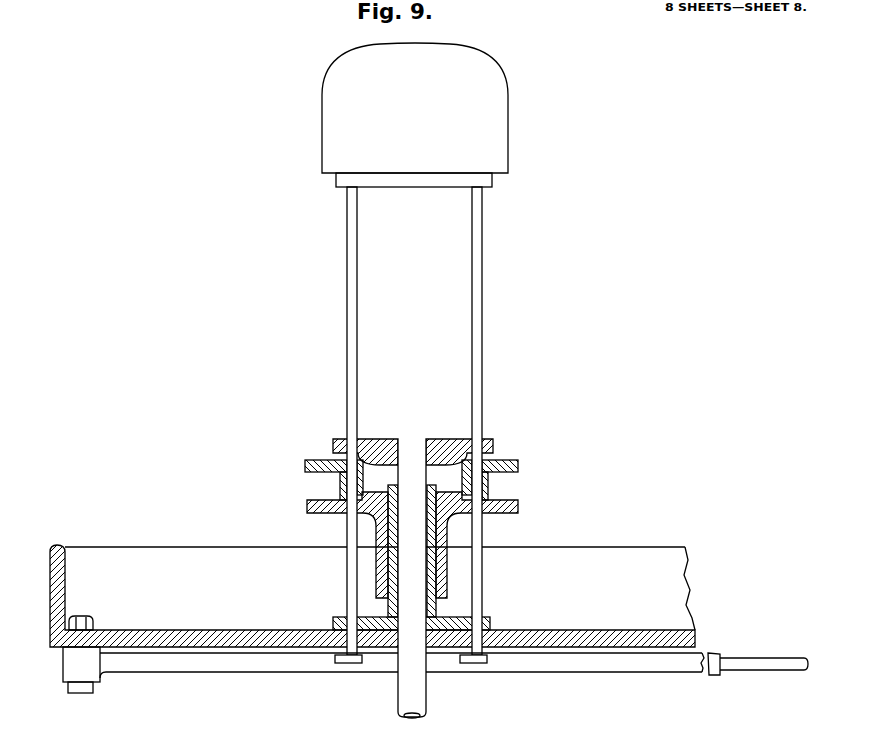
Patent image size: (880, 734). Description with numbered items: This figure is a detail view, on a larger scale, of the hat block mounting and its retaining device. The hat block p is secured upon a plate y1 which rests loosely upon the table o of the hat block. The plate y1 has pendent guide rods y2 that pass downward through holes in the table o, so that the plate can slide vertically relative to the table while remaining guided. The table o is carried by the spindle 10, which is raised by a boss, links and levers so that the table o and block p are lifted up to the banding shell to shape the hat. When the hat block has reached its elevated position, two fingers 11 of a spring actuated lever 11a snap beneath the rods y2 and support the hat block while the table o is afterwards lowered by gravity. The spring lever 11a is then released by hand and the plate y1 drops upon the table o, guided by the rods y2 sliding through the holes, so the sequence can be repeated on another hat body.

The hat block p is at (415, 108).
The plate y1 is at (402, 182).
The pendent guide rods y2 is at (498, 355).
The table o is at (382, 439).
The spindle 10 is at (413, 690).
The fingers 11 is at (352, 663).
The spring actuated lever 11a is at (634, 663).